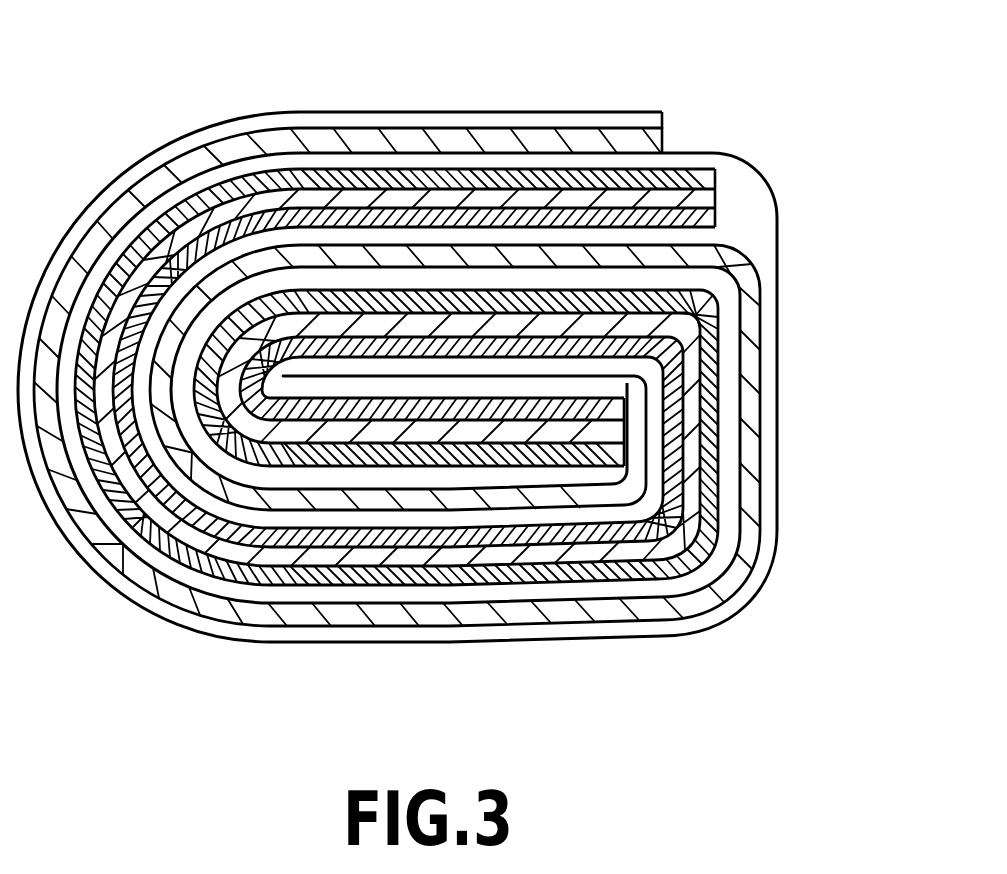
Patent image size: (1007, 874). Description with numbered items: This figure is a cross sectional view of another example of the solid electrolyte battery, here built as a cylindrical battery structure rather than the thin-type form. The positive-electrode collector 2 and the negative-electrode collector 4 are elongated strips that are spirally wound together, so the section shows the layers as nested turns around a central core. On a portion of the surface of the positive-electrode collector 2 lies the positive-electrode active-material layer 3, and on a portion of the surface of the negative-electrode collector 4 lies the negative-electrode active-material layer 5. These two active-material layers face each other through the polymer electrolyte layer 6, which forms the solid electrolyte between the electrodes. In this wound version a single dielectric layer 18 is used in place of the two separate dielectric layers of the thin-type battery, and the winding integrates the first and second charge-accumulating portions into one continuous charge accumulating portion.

The positive-electrode collector 2 is at (707, 249).
The positive-electrode active-material layer 3 is at (702, 238).
The negative-electrode collector 4 is at (637, 120).
The negative-electrode active-material layer 5 is at (705, 185).
The polymer electrolyte layer 6 is at (707, 200).
The dielectric layer 18 is at (667, 146).